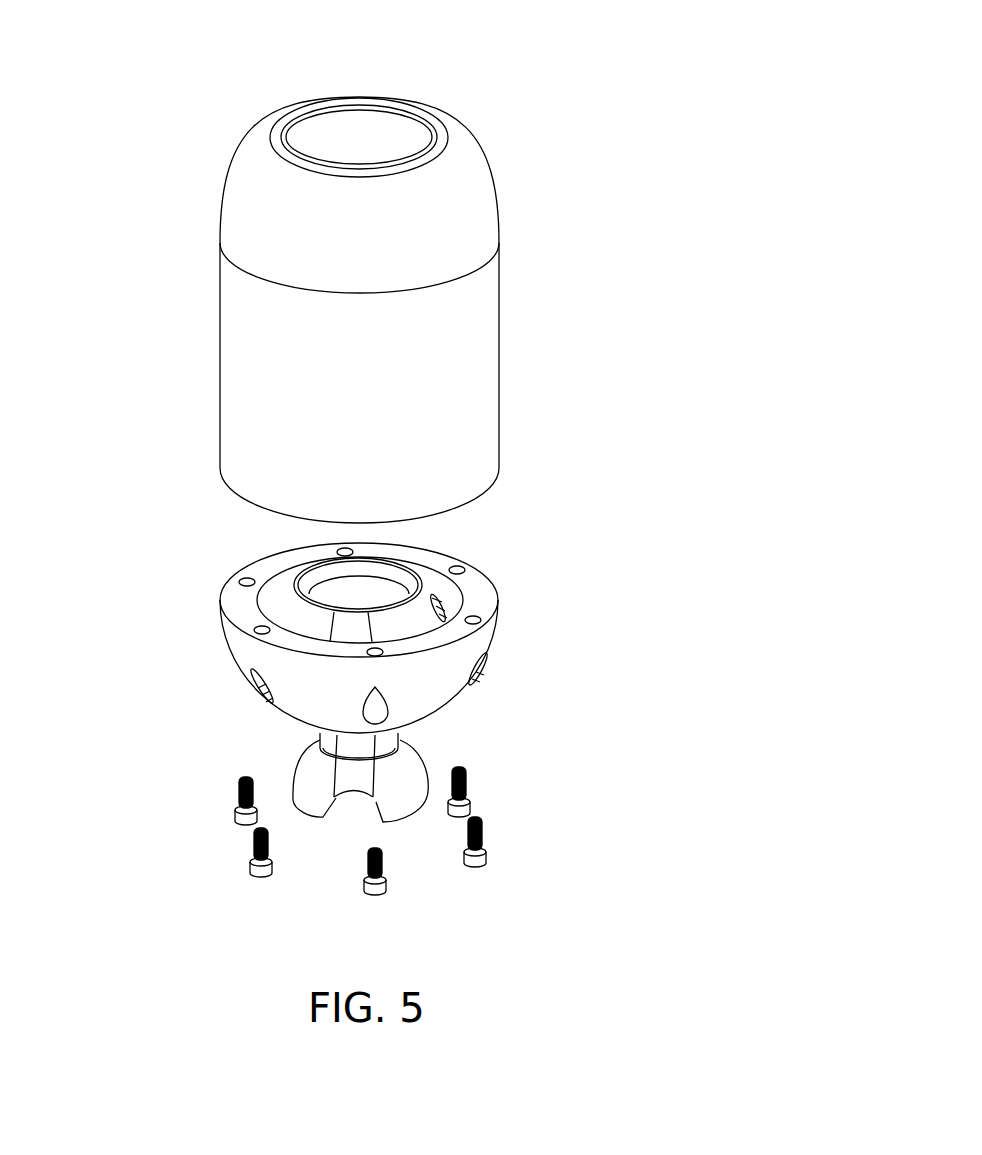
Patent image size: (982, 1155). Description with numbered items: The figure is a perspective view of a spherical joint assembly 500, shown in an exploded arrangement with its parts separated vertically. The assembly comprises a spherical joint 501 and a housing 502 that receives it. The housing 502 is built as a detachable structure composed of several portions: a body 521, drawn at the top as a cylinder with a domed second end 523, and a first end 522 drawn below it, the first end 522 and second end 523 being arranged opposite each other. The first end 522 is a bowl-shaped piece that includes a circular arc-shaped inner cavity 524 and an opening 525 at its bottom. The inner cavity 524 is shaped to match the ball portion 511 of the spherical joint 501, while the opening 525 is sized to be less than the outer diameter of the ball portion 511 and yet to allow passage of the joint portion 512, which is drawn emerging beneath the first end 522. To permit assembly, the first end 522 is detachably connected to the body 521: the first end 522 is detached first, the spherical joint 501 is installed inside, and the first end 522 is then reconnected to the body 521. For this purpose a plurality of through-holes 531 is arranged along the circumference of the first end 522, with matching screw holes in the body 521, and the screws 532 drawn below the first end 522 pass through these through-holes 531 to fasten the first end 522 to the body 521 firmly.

The spherical joint assembly 500 is at (762, 73).
The housing 502 is at (160, 404).
The second end 523 is at (240, 195).
The body 521 is at (499, 375).
The first end 522 is at (130, 725).
The spherical joint 501 is at (262, 597).
The ball portion 511 is at (425, 580).
The inner cavity 524 is at (452, 607).
The through-hole 531 is at (482, 675).
The opening 525 is at (314, 730).
The joint portion 512 is at (418, 758).
The screws 532 is at (237, 807).